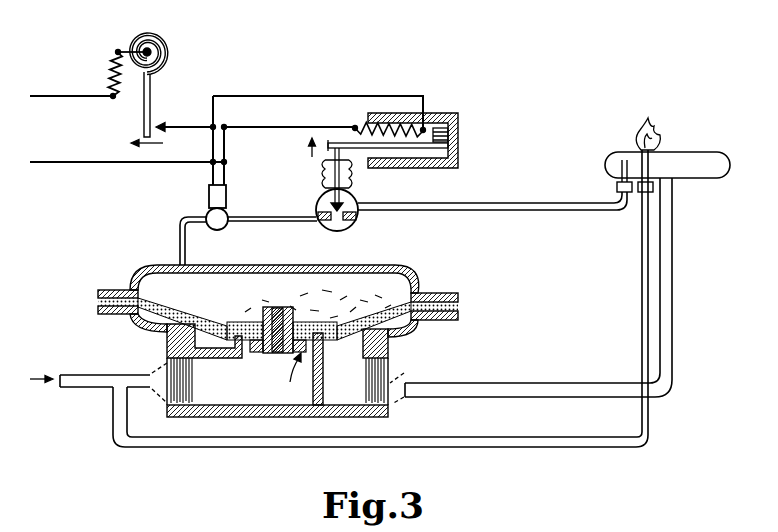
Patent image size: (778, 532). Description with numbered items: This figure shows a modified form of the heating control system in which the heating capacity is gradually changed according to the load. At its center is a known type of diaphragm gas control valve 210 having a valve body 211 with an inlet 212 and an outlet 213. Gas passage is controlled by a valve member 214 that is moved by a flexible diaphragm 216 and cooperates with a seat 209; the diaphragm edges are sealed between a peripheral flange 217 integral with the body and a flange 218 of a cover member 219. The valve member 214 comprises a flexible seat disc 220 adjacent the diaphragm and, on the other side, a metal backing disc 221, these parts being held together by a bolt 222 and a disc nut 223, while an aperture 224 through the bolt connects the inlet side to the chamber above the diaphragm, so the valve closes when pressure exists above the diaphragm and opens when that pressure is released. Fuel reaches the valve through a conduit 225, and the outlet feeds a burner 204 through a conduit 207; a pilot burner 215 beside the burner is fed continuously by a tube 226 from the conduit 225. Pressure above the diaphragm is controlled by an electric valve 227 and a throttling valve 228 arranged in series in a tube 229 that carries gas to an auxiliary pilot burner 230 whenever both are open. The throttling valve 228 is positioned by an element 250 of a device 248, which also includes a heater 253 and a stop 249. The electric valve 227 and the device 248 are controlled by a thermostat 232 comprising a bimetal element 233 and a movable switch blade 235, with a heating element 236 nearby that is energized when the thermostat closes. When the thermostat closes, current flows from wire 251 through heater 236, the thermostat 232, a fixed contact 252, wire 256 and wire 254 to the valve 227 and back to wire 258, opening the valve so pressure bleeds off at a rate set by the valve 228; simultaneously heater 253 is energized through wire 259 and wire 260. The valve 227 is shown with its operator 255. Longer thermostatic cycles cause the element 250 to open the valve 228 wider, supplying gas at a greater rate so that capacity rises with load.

The burner 204 is at (686, 152).
The conduit 207 is at (673, 294).
The seat 209 is at (312, 355).
The diaphragm gas control valve 210 is at (283, 360).
The valve body 211 is at (277, 418).
The inlet 212 is at (167, 367).
The outlet 213 is at (393, 375).
The valve member 214 is at (291, 377).
The pilot burner 215 is at (658, 126).
The flexible diaphragm 216 is at (212, 312).
The peripheral flange 217 is at (97, 312).
The flange 218 is at (110, 290).
The cover member 219 is at (377, 267).
The seat disc 220 is at (326, 340).
The metal backing disc 221 is at (307, 323).
The bolt 222 is at (265, 307).
The disc nut 223 is at (265, 348).
The aperture 224 is at (275, 354).
The conduit 225 is at (78, 389).
The tube 226 is at (527, 449).
The electric valve 227 is at (203, 197).
The throttling valve 228 is at (308, 200).
The tube 229 is at (477, 212).
The auxiliary pilot burner 230 is at (616, 172).
The thermostat 232 is at (174, 37).
The bimetal element 233 is at (137, 34).
The movable switch blade 235 is at (152, 85).
The heating element 236 is at (110, 69).
The device 248 is at (441, 126).
The stop 249 is at (460, 143).
The element 250 is at (408, 168).
The wire 251 is at (78, 98).
The fixed contact 252 is at (158, 123).
The heater 253 is at (392, 123).
The wire 254 is at (212, 146).
The solenoid valve 255 is at (224, 184).
The wire 256 is at (184, 125).
The wire 258 is at (68, 165).
The wire 259 is at (297, 95).
The wire 260 is at (278, 110).